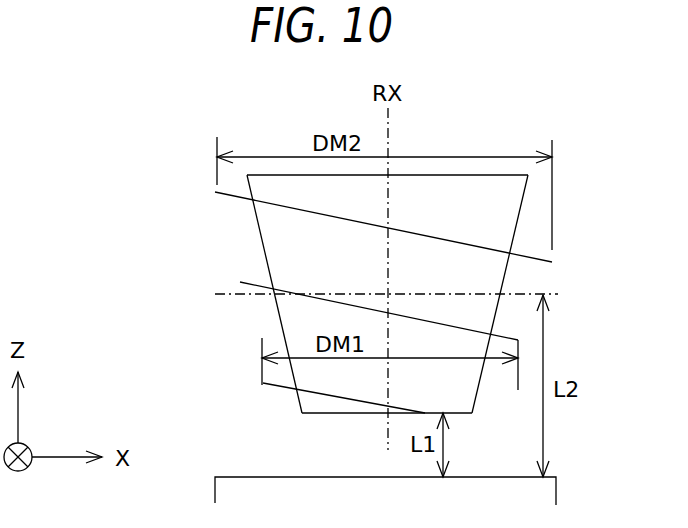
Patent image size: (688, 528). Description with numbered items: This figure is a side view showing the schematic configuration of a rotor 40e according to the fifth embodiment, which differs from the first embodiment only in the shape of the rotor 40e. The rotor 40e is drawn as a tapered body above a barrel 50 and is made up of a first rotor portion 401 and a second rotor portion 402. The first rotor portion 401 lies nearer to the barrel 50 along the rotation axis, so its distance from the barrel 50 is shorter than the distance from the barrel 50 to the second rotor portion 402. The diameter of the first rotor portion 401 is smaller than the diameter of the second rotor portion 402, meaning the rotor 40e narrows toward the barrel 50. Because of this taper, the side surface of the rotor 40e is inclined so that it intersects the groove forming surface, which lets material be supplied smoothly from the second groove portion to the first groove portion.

The rotor 40e is at (369, 237).
The second rotor portion 402 is at (203, 173).
The first rotor portion 401 is at (203, 300).
The barrel 50 is at (559, 493).